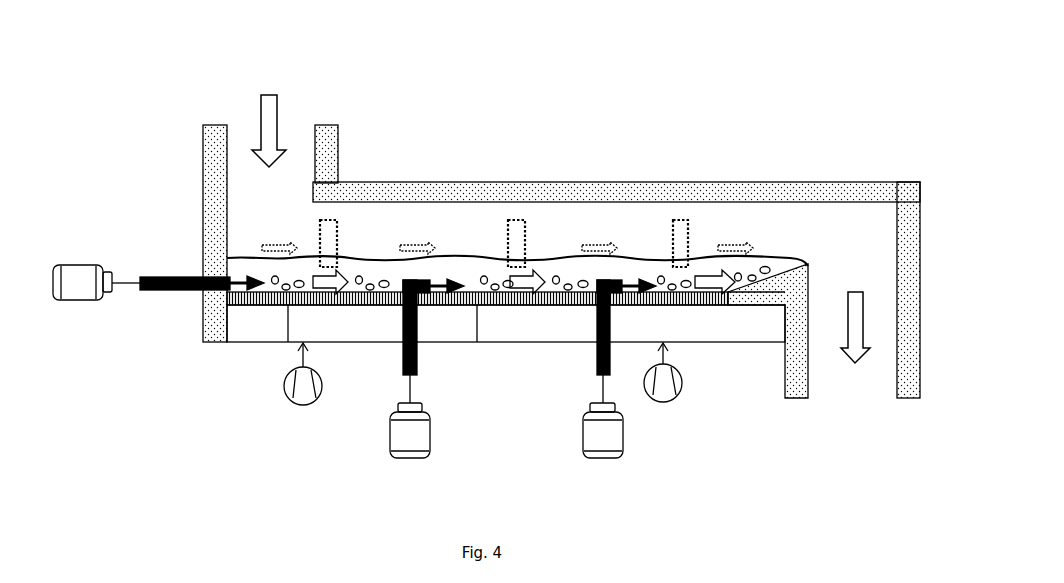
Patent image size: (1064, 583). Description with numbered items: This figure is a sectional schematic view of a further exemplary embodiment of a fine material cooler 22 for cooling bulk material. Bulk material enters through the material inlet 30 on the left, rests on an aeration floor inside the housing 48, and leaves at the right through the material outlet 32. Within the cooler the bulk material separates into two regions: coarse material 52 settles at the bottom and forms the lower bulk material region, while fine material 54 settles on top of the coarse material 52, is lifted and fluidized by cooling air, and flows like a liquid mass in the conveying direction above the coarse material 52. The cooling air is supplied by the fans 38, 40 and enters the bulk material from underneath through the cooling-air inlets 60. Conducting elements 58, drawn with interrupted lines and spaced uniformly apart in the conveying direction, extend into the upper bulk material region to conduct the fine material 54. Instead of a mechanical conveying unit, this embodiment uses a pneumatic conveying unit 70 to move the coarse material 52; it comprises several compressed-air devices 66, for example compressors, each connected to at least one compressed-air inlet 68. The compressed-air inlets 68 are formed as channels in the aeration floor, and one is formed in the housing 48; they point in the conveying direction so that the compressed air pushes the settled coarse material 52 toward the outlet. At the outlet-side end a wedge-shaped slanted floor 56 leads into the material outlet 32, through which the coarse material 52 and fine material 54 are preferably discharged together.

The fine material cooler 22 is at (777, 78).
The material inlet 30 is at (246, 125).
The material outlet 32 is at (835, 368).
The fan 38 is at (306, 388).
The fan 40 is at (663, 390).
The housing 48 is at (609, 192).
The coarse material 52 is at (262, 297).
The fine material 54 is at (288, 265).
The slanted floor 56 is at (778, 282).
The conducting elements 58 is at (515, 268).
The cooling-air inlets 60 is at (347, 307).
The compressed-air device 66 is at (80, 287).
The compressed-air inlets 68 is at (417, 280).
The pneumatic conveying unit 70 is at (433, 307).